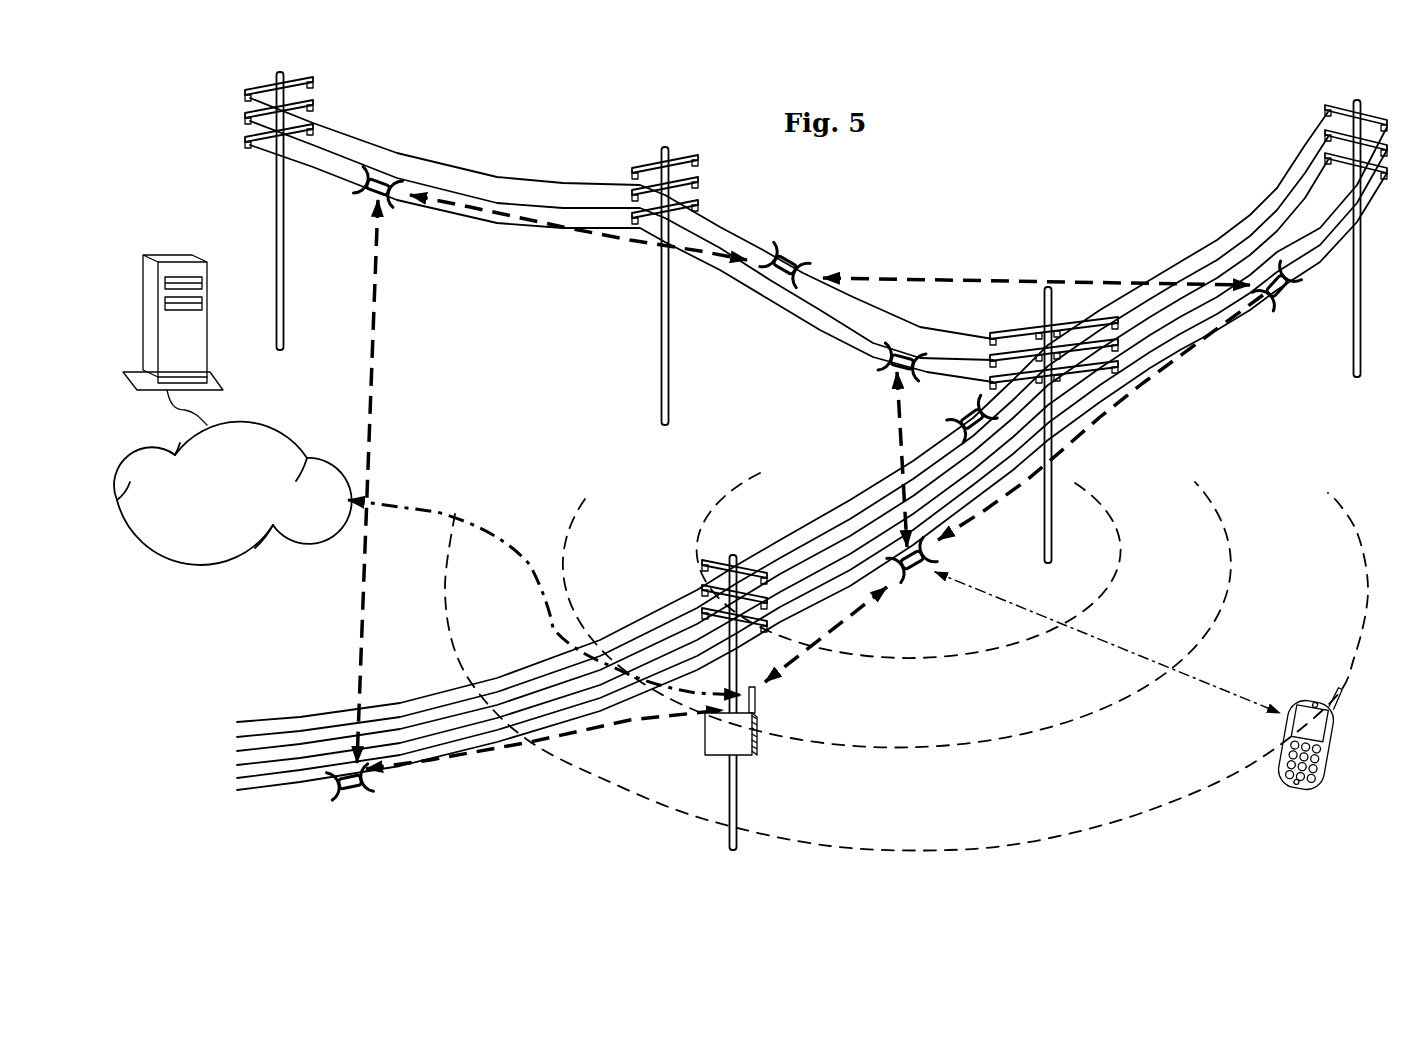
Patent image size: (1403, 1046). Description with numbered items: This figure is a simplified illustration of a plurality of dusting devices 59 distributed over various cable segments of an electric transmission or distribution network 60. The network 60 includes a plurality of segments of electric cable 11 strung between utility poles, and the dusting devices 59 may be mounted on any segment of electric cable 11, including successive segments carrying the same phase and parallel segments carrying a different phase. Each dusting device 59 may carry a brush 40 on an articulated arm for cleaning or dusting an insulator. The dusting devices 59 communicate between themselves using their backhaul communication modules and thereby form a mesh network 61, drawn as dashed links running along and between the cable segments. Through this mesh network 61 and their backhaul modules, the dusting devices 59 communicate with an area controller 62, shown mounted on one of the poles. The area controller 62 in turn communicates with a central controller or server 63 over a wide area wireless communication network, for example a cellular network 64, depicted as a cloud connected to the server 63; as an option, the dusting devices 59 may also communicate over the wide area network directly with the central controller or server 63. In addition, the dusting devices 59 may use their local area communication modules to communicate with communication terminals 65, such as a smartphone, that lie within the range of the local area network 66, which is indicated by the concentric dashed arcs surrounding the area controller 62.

The electric transmission or distribution network 60 is at (967, 190).
The electric cable 11 is at (473, 220).
The dusting device 59 is at (360, 197).
The brush 40 is at (1279, 310).
The mesh network 61 is at (617, 243).
The area controller 62 is at (770, 717).
The central controller or server 63 is at (176, 258).
The cellular network 64 is at (255, 565).
The communication terminal 65 is at (1322, 760).
The local area network 66 is at (1135, 648).